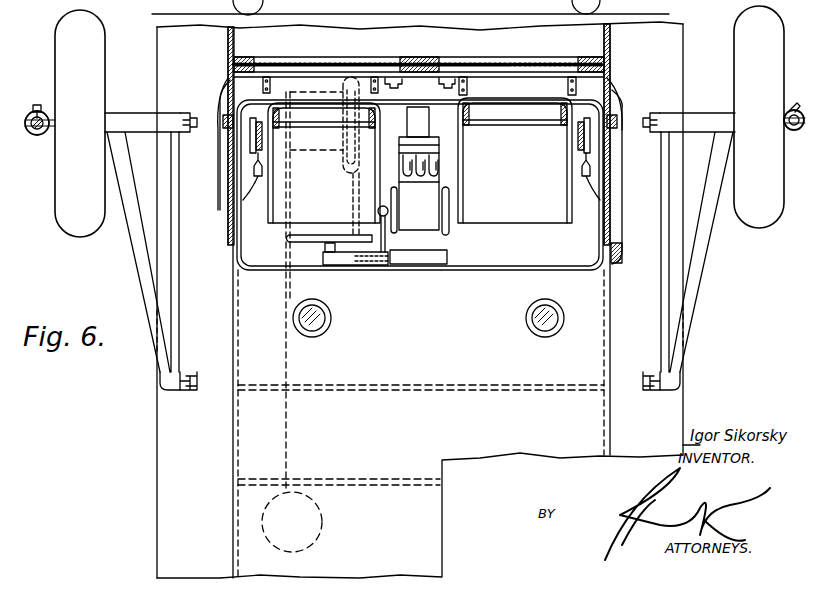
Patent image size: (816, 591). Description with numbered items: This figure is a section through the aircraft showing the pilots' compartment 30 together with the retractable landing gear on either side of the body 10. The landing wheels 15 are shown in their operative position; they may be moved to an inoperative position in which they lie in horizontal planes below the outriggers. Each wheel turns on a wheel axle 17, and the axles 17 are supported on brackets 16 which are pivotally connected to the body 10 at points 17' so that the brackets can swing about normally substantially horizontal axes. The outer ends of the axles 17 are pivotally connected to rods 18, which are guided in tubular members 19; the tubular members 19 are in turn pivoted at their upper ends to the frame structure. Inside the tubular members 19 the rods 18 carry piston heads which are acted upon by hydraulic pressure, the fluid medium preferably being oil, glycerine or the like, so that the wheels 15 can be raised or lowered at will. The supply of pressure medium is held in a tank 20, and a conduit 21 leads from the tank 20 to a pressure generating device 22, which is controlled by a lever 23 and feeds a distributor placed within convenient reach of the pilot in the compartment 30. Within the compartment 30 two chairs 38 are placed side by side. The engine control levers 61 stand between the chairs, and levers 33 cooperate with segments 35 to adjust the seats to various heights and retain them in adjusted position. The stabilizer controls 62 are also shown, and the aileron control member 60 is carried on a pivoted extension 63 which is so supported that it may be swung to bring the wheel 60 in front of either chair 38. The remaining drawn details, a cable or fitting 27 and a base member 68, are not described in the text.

The body 10 is at (172, 535).
The landing wheels 15 is at (95, 33).
The brackets 16 is at (140, 258).
The wheel axles 17 is at (380, 144).
The pivot points 17' is at (394, 220).
The rods 18 is at (47, 134).
The tubular members 19 is at (55, 114).
The tank 20 is at (321, 520).
The conduit 21 is at (290, 434).
The pressure generating device 22 is at (344, 160).
The lever 23 is at (390, 262).
The control cable 27 is at (228, 112).
The pilots' compartment 30 is at (505, 81).
The levers 33 is at (232, 204).
The segments 35 is at (250, 137).
The chairs 38 is at (278, 218).
The aileron control member 60 is at (297, 244).
The engine control levers 61 is at (409, 165).
The stabilizer controls 62 is at (398, 192).
The pivoted extension 63 is at (337, 261).
The pedestal base 68 is at (418, 263).